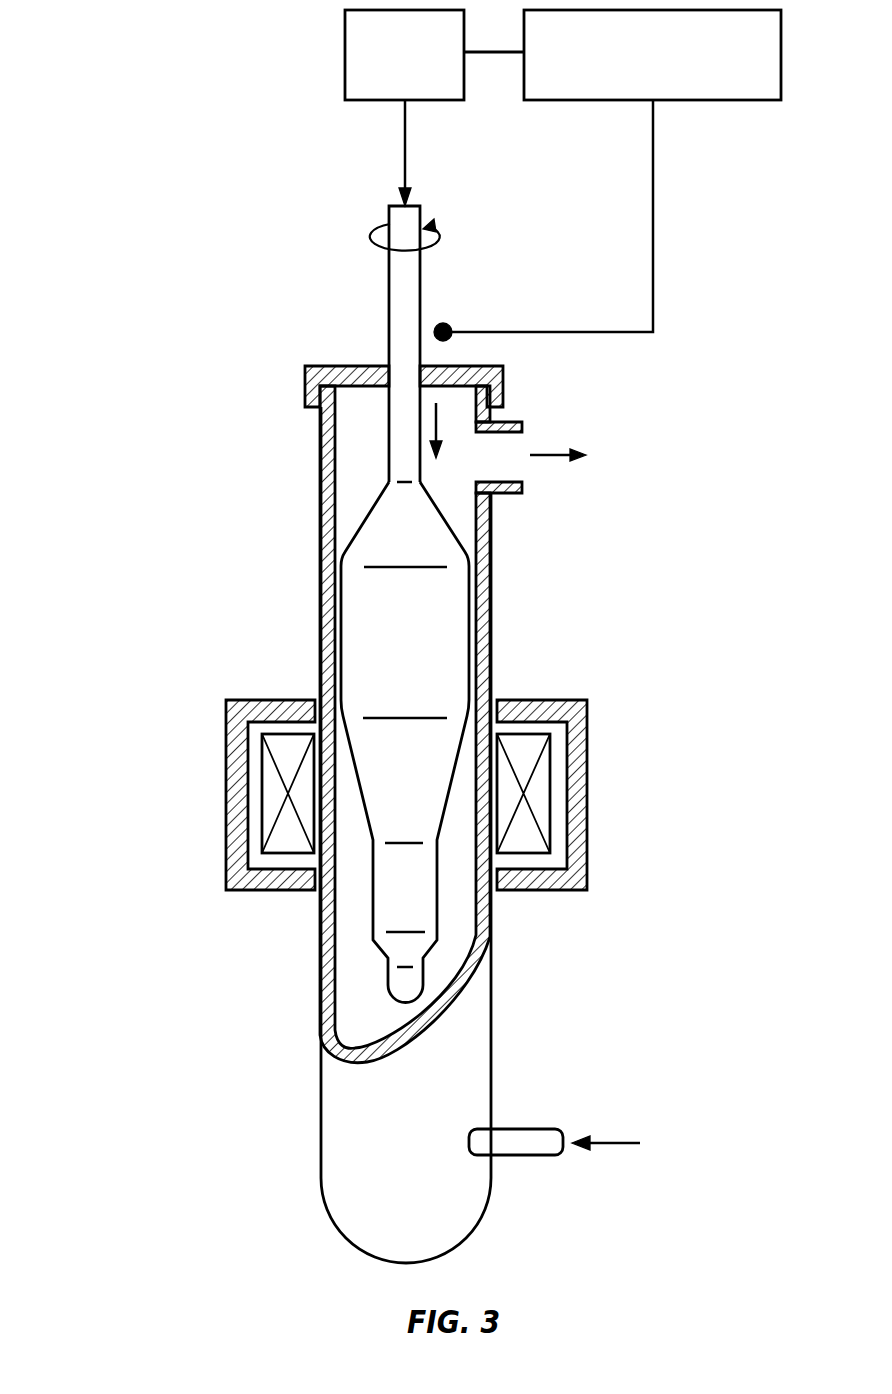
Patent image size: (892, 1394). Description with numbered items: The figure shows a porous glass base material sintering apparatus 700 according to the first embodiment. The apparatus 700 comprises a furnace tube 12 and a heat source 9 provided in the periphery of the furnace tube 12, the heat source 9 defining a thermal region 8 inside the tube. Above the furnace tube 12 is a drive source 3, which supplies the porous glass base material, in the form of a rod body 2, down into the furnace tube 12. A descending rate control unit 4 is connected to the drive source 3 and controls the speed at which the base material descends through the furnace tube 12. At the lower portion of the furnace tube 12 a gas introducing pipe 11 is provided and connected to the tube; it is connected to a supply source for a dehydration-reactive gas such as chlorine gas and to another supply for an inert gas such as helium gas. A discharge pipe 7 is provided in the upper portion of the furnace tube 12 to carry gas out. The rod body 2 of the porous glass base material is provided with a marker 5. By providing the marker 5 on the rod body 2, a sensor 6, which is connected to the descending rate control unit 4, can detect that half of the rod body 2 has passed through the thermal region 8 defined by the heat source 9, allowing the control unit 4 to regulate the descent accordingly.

The porous glass base material sintering apparatus 700 is at (128, 40).
The rod body 2 is at (378, 522).
The drive source 3 is at (345, 52).
The descending rate control unit 4 is at (781, 52).
The marker 5 is at (404, 313).
The sensor 6 is at (449, 329).
The discharge pipe 7 is at (504, 494).
The thermal region 8 is at (347, 820).
The heat source 9 is at (526, 743).
The gas introducing pipe 11 is at (537, 1149).
The furnace tube 12 is at (474, 1062).